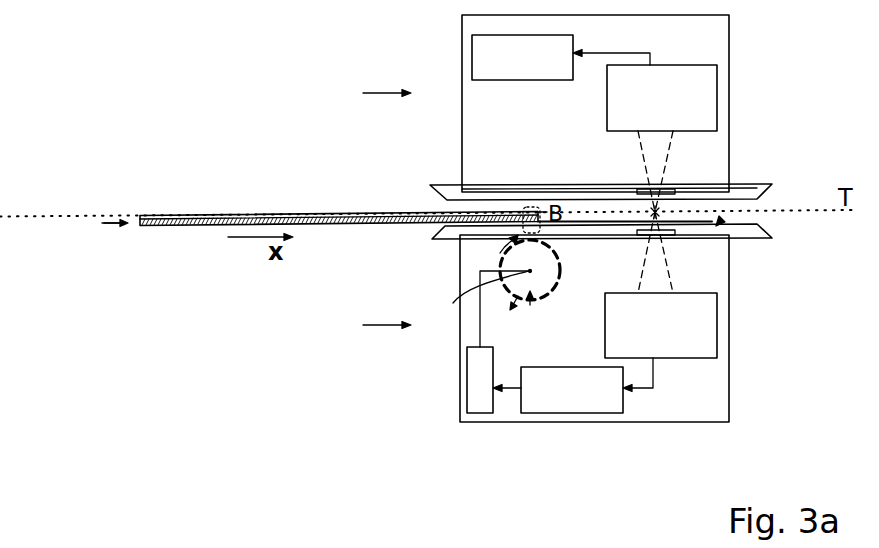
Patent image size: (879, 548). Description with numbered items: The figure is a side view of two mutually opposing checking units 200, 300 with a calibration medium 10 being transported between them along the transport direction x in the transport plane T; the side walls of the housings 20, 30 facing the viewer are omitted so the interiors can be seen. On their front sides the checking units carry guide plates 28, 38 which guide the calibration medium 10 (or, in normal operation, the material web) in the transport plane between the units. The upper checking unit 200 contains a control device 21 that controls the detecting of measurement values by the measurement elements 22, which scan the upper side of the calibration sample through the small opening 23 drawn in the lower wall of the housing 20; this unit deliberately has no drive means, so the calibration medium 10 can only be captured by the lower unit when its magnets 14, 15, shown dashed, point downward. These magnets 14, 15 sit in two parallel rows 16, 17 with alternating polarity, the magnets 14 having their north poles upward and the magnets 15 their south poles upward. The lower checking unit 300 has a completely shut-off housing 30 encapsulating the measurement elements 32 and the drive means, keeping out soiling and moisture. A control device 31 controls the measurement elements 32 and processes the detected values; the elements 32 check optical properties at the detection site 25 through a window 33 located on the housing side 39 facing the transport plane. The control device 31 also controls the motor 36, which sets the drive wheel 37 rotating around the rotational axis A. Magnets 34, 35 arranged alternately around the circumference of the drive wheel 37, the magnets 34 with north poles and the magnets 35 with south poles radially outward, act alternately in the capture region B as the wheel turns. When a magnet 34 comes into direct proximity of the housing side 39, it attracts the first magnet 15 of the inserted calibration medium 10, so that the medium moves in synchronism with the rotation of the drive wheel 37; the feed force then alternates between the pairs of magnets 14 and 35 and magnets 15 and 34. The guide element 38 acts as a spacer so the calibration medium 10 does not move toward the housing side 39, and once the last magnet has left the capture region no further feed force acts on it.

The calibration medium 10 is at (250, 213).
The magnets 14 is at (171, 226).
The magnets 15 is at (150, 226).
The rows 16 is at (78, 232).
The rows 17 is at (98, 232).
The housing 20 is at (731, 42).
The control device 21 is at (540, 80).
The measurement elements 22 is at (677, 65).
The window of marking unit 23 is at (672, 190).
The detection site 25 is at (664, 212).
The guide plate 28 is at (430, 187).
The housing 30 is at (731, 405).
The control device 31 is at (588, 413).
The measurement elements 32 is at (687, 358).
The window 33 is at (674, 236).
The magnets 34 is at (519, 304).
The magnets 35 is at (535, 302).
The motor 36 is at (467, 365).
The drive wheel 37 is at (554, 259).
The guide element 38 is at (440, 232).
The housing side 39 is at (721, 221).
The checking unit 200 is at (363, 94).
The checking unit 300 is at (363, 326).